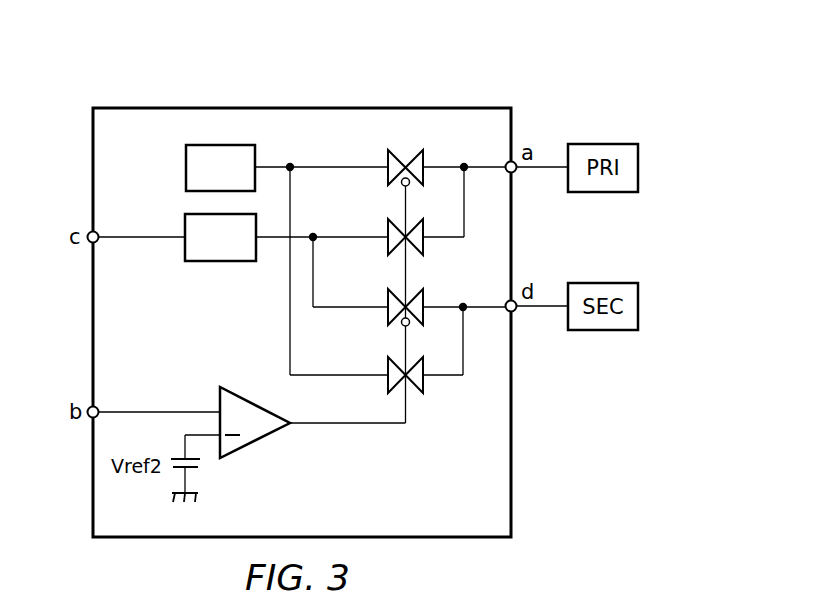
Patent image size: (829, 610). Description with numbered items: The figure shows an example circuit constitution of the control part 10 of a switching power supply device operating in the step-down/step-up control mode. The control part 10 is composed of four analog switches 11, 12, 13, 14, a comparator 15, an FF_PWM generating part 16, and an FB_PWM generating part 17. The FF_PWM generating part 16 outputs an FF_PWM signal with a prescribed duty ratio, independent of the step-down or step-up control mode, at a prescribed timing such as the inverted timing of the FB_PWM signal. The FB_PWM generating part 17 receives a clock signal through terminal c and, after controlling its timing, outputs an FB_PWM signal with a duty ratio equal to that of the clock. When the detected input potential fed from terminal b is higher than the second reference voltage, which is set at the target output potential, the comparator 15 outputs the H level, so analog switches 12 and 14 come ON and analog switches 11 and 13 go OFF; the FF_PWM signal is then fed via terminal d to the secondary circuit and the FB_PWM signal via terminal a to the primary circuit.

The control part 10 is at (376, 107).
The analog switch 11 is at (388, 158).
The analog switch 12 is at (388, 227).
The analog switch 13 is at (388, 297).
The analog switch 14 is at (388, 366).
The comparator 15 is at (253, 443).
The FF_PWM generating part 16 is at (186, 161).
The FB_PWM generating part 17 is at (218, 261).